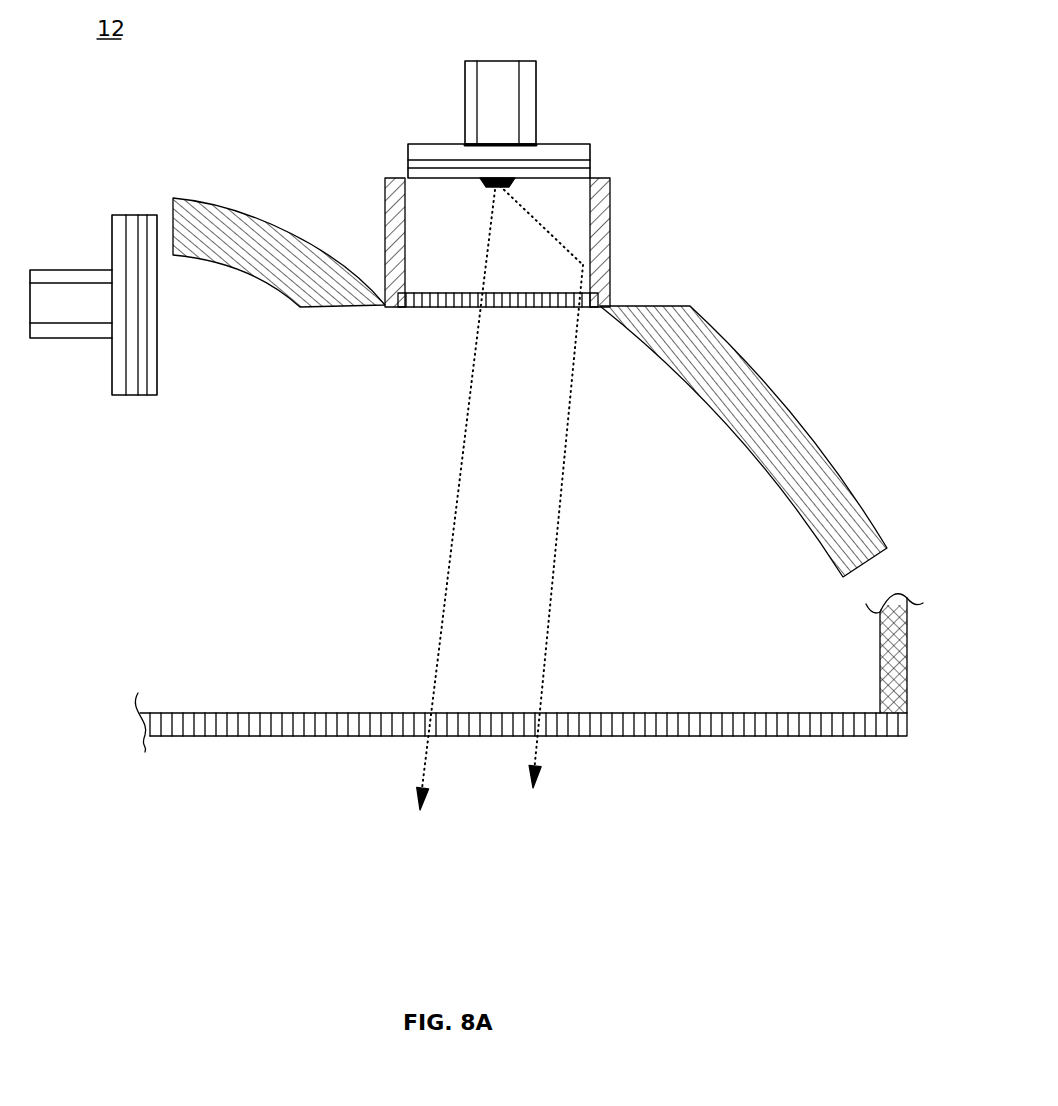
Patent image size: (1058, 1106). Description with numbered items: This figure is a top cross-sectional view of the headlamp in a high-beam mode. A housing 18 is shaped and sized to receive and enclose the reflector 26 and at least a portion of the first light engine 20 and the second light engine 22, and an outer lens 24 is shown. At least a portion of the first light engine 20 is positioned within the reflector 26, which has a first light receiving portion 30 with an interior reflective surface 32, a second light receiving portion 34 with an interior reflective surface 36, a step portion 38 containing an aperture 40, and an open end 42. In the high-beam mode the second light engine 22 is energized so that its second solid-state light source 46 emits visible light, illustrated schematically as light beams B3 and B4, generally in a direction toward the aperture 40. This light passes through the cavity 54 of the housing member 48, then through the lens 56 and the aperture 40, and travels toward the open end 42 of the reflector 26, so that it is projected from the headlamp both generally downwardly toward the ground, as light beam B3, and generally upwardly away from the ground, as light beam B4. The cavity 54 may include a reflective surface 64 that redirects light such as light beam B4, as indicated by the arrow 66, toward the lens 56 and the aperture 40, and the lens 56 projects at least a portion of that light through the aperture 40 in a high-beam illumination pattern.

The housing 18 is at (879, 702).
The first light engine 20 is at (132, 412).
The second light engine 22 is at (548, 74).
The outer lens 24 is at (760, 738).
The reflector 26 is at (710, 300).
The first light receiving portion of reflector 30 is at (252, 201).
The interior reflective surface of first light receiving portion 32 is at (222, 268).
The second light receiving portion of reflector 34 is at (800, 432).
The interior reflective surface of second light receiving portion 36 is at (775, 492).
The step portion of reflector 38 is at (386, 310).
The aperture in step portion 40 is at (600, 310).
The open end of reflector 42 is at (843, 582).
The second solid-state light source 46 is at (484, 190).
The housing member 48 is at (610, 236).
The cavity of housing member 54 is at (444, 269).
The projector lens 56 is at (514, 310).
The reflective surface of cavity 64 is at (590, 207).
The reflection of light from cavity 66 is at (574, 265).
The light beam B3 is at (443, 620).
The light beam B4 is at (557, 570).